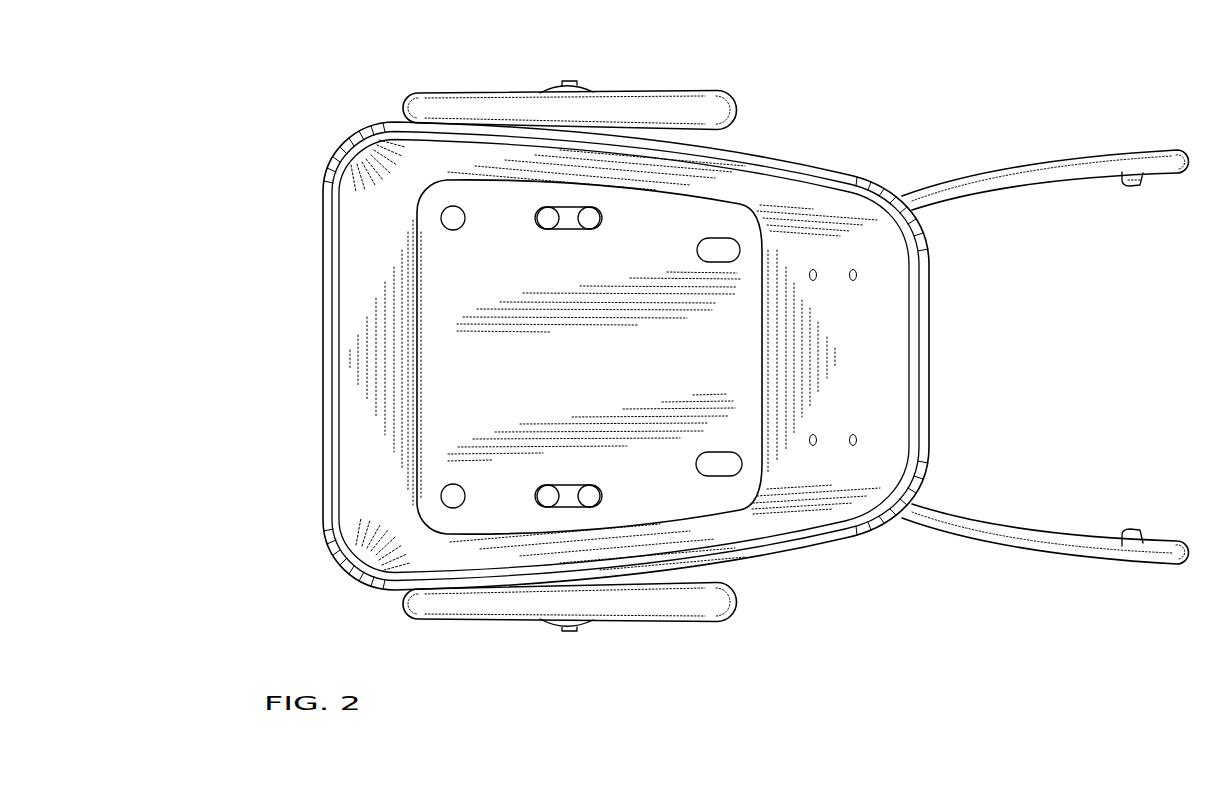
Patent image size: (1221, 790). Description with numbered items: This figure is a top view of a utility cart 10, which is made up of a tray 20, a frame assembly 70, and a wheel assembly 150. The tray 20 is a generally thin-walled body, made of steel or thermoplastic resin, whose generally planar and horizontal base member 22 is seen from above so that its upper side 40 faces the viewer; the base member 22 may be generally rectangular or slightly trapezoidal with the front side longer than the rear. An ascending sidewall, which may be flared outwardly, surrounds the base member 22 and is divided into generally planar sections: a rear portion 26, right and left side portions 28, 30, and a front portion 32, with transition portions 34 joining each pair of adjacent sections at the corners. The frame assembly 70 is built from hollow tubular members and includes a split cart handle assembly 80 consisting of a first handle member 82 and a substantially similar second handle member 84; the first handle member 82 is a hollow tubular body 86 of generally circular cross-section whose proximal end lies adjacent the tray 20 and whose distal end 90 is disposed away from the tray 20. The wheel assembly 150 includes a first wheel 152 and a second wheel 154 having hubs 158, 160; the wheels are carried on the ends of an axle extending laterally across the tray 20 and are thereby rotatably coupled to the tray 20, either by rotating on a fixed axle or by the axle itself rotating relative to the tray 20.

The utility cart 10 is at (362, 80).
The tray 20 is at (883, 348).
The base member 22 is at (435, 460).
The rear portion 26 is at (880, 400).
The right side portion 28 is at (712, 178).
The left side portion 30 is at (707, 528).
The front portion 32 is at (370, 348).
The transition portions 34 is at (370, 175).
The upper side 40 is at (450, 402).
The frame assembly 70 is at (1073, 138).
The split cart handle assembly 80 is at (1108, 580).
The first handle member 82 is at (1092, 153).
The second handle member 84 is at (1072, 542).
The tubular body 86 is at (1045, 170).
The distal end 90 is at (1138, 186).
The wheel assembly 150 is at (577, 652).
The first wheel 152 is at (468, 105).
The second wheel 154 is at (513, 617).
The hub 158 is at (590, 92).
The hub 160 is at (587, 627).